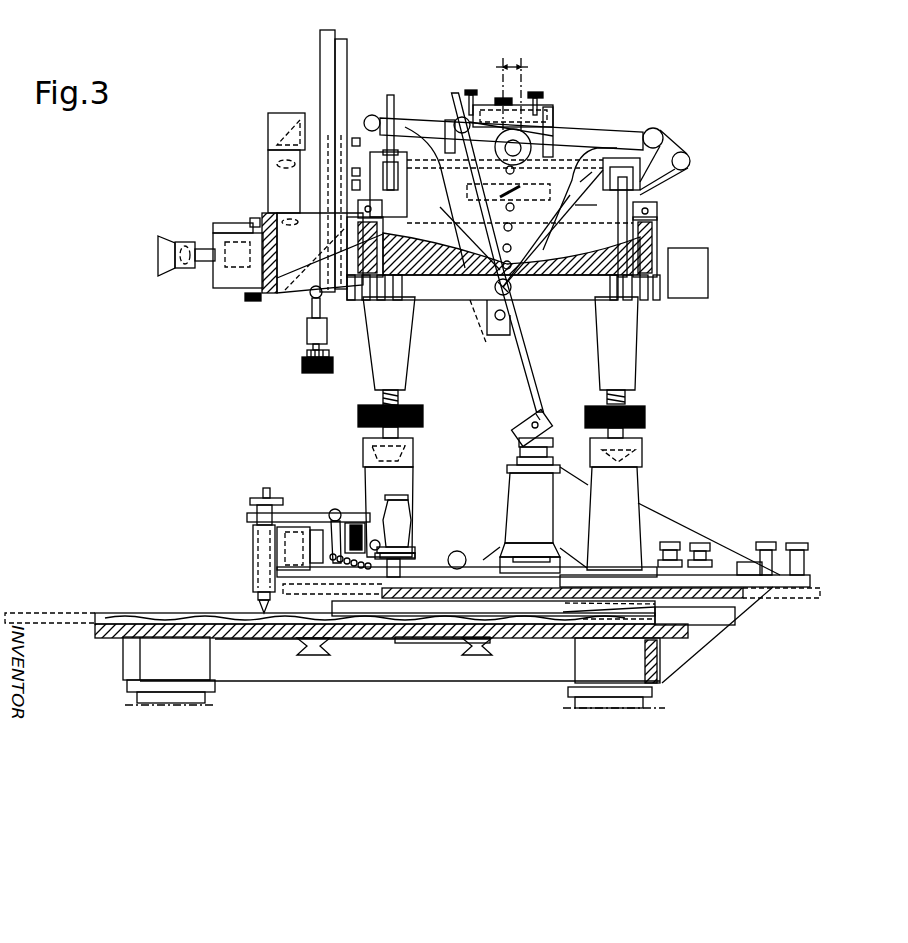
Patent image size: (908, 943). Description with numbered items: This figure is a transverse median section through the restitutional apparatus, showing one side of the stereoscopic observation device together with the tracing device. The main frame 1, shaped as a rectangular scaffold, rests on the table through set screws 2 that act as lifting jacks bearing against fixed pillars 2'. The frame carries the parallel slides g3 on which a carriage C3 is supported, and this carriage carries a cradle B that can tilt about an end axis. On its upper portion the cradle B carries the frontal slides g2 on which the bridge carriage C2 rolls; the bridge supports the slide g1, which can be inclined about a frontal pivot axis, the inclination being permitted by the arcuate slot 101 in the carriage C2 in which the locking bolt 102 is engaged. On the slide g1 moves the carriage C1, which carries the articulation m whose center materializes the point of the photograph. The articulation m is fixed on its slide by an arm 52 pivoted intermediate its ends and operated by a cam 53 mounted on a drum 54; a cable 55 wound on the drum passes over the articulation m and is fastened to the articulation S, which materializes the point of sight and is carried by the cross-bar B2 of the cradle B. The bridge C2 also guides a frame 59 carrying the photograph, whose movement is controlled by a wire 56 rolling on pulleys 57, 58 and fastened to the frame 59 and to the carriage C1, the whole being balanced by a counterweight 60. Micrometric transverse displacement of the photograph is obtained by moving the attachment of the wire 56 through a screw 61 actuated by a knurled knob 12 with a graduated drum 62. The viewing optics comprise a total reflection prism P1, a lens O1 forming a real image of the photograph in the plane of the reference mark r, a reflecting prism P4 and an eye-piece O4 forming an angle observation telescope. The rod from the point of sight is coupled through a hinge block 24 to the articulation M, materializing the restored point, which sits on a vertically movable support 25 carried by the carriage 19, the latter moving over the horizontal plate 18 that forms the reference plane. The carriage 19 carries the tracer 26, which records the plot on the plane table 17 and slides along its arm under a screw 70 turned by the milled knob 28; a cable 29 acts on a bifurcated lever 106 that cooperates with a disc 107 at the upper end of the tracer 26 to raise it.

The frame 59 is at (320, 76).
The total reflection prism P1 is at (282, 139).
The lens O1 is at (277, 164).
The reference mark r is at (268, 214).
The eye-piece O4 is at (182, 268).
The reflecting prism P4 is at (240, 267).
The screw 61 is at (307, 346).
The graduated drum 62 is at (329, 353).
The knurled knob 12 is at (302, 366).
The cable 55 is at (457, 178).
The frontal parallel slides g2 is at (707, 182).
The carriage C3 is at (358, 211).
The parallel slides g3 is at (375, 263).
The main frame 1 is at (438, 267).
The cross-bar B2 is at (572, 300).
The counterweight 60 is at (694, 282).
The cradle B is at (580, 205).
The arcuate slot 101 is at (586, 184).
The articulation m is at (452, 95).
The carriage C2 is at (378, 118).
The wire 56 is at (408, 118).
The pulley 57 is at (660, 132).
The pulley 58 is at (690, 160).
The cam 53 is at (640, 180).
The arm 52 is at (487, 138).
The carriage C1 is at (537, 120).
The drum 54 is at (520, 158).
The slide g1 is at (553, 135).
The locking bolt 102 is at (508, 217).
The articulation S is at (512, 292).
The set screw 2 is at (653, 367).
The pillar 2' is at (662, 452).
The vertically movable support 25 is at (517, 436).
The carriage 19 is at (565, 560).
The hinge block 24 is at (545, 422).
The articulation M is at (540, 418).
The disc 107 is at (255, 500).
The tracer 26 is at (255, 598).
The bifurcated lever 106 is at (297, 516).
The screw 70 is at (328, 540).
The milled knob 28 is at (365, 535).
The cable 29 is at (372, 525).
The horizontal plate 18 is at (447, 598).
The plane table 17 is at (287, 620).